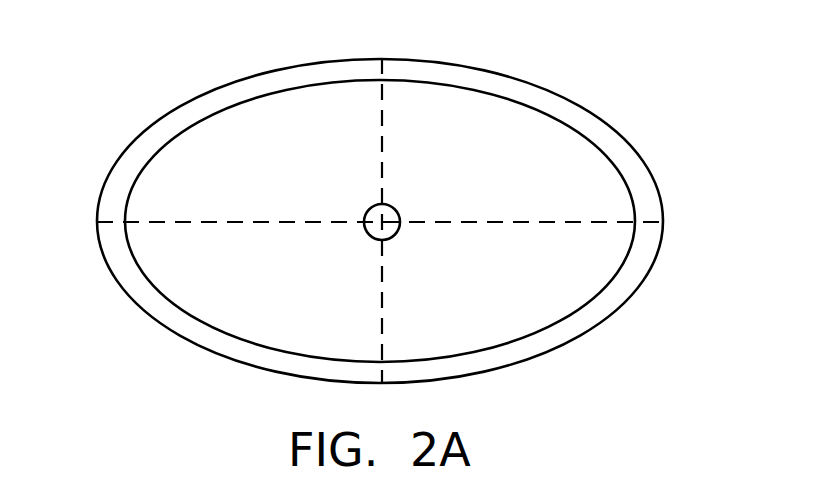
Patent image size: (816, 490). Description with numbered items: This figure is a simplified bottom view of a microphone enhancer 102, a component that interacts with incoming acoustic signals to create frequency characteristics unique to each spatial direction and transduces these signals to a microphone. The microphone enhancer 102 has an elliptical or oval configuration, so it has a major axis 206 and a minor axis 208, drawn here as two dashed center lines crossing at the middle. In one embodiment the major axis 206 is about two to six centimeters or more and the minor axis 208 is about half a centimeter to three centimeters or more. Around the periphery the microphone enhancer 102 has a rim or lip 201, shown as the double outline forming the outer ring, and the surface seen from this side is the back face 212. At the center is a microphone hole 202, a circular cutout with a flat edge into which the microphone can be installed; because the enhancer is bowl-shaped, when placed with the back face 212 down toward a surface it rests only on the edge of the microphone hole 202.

The microphone enhancer 102 is at (386, 194).
The rim or lip 201 is at (213, 112).
The microphone hole 202 is at (394, 208).
The major axis 206 is at (575, 221).
The minor axis 208 is at (380, 110).
The back face 212 is at (203, 279).